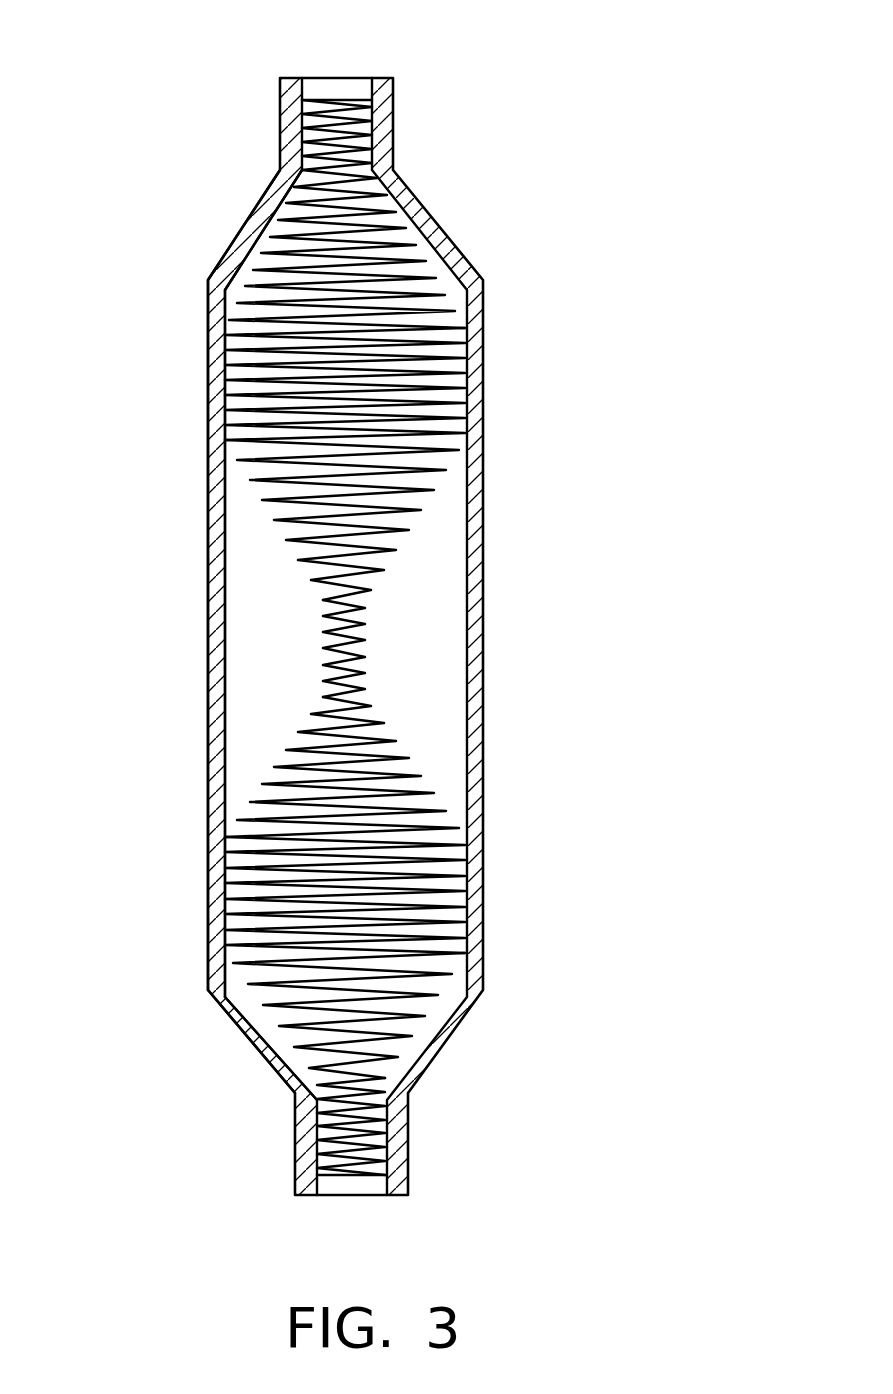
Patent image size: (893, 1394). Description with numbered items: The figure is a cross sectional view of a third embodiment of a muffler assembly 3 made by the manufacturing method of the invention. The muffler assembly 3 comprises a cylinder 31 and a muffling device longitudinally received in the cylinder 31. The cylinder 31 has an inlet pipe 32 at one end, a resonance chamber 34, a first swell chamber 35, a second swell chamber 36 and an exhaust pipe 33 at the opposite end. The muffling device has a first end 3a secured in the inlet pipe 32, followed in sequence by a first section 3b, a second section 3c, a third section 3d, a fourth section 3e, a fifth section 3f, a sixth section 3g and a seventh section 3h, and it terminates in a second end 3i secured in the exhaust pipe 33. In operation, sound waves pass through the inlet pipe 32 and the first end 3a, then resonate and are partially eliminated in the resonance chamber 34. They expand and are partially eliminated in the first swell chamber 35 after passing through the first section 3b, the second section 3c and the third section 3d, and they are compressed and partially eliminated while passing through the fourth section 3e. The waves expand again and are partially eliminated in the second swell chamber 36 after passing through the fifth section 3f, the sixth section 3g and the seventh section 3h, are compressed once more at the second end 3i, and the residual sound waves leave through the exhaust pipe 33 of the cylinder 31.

The muffler assembly 3 is at (258, 639).
The cylinder 31 is at (217, 777).
The inlet pipe 32 is at (333, 88).
The exhaust pipe 33 is at (362, 1180).
The resonance chamber 34 is at (263, 242).
The first swell chamber 35 is at (247, 592).
The second swell chamber 36 is at (263, 1012).
The first end 3a is at (373, 163).
The first section 3b is at (405, 293).
The second section 3c is at (430, 390).
The third section 3d is at (413, 517).
The fourth section 3e is at (365, 655).
The fifth section 3f is at (393, 777).
The sixth section 3g is at (417, 900).
The seventh section 3h is at (402, 1037).
The second end 3i is at (360, 1138).